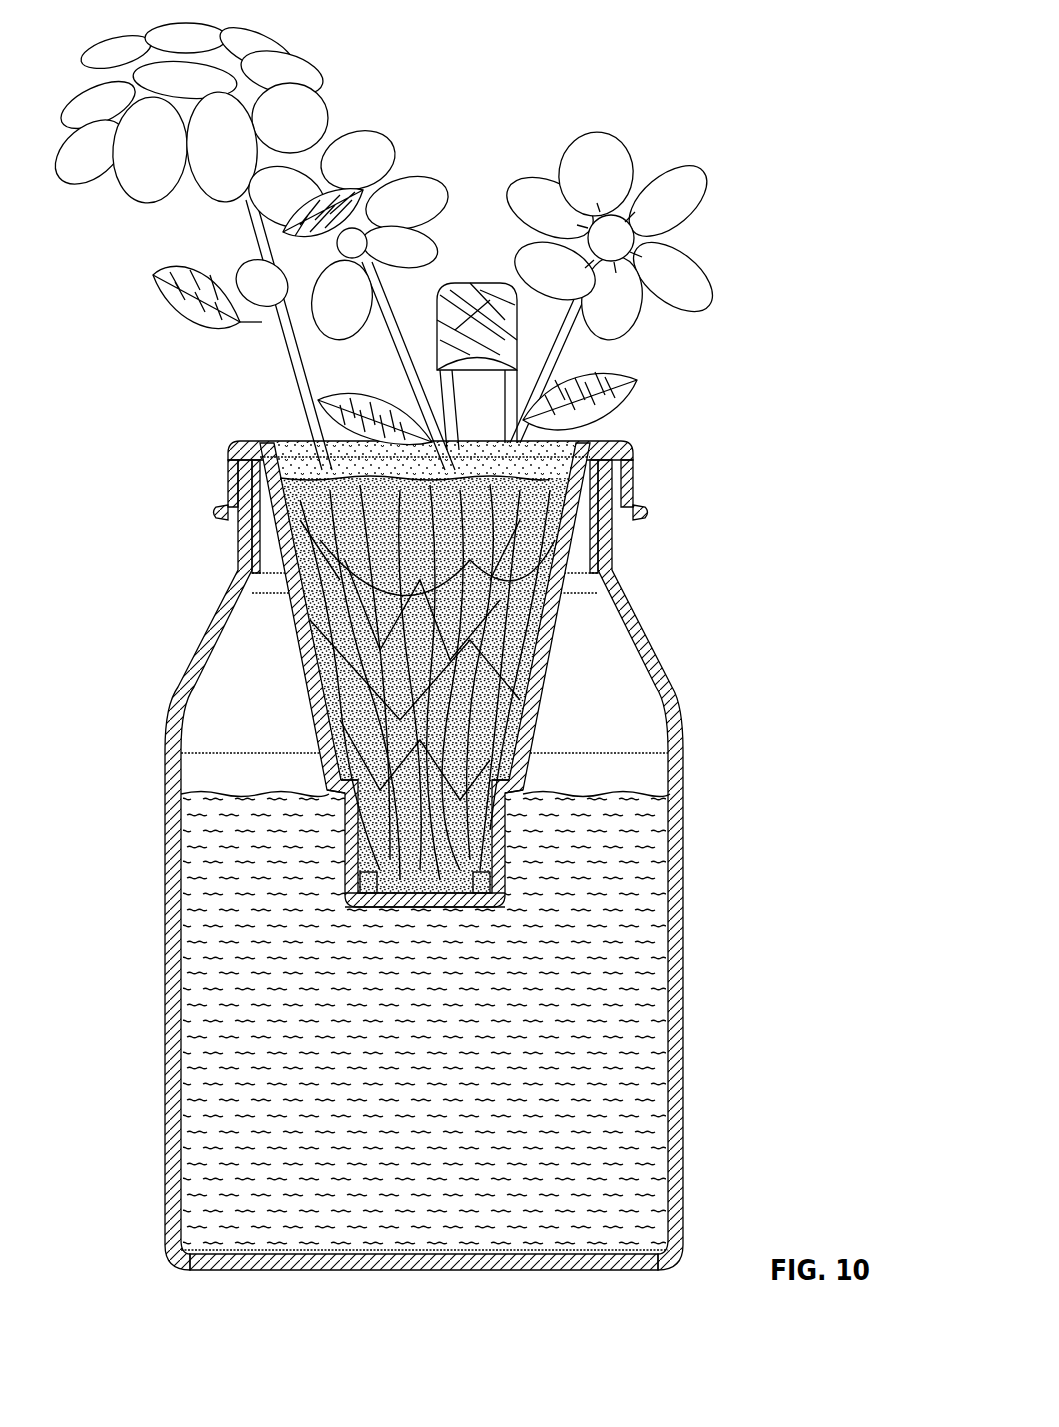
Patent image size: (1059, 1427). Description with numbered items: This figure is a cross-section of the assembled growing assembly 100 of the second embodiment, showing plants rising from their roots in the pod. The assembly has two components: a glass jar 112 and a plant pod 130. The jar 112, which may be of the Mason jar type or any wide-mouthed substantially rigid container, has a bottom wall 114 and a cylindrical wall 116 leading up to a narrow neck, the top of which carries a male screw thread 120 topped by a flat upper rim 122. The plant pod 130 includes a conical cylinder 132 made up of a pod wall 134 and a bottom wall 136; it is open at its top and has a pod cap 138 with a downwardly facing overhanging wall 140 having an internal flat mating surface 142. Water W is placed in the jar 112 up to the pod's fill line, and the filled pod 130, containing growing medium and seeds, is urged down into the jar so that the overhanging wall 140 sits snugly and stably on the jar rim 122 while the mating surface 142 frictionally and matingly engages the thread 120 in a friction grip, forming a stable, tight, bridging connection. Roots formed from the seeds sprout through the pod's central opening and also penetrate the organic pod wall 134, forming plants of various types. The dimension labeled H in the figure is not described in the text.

The growing assembly 100 is at (470, 883).
The glass jar 112 is at (470, 883).
The bottom wall 114 is at (600, 1270).
The cylindrical wall 116 is at (628, 497).
The male screw thread 120 is at (618, 540).
The flat upper rim 122 is at (608, 452).
The plant pod 130 is at (433, 738).
The conical cylinder 132 is at (540, 713).
The pod wall 134 is at (535, 768).
The bottom wall 136 is at (455, 910).
The pod cap 138 is at (423, 505).
The overhanging wall 140 is at (230, 490).
The internal flat mating surface 142 is at (228, 511).
The height of insert in container H is at (340, 726).
The water W is at (662, 1140).